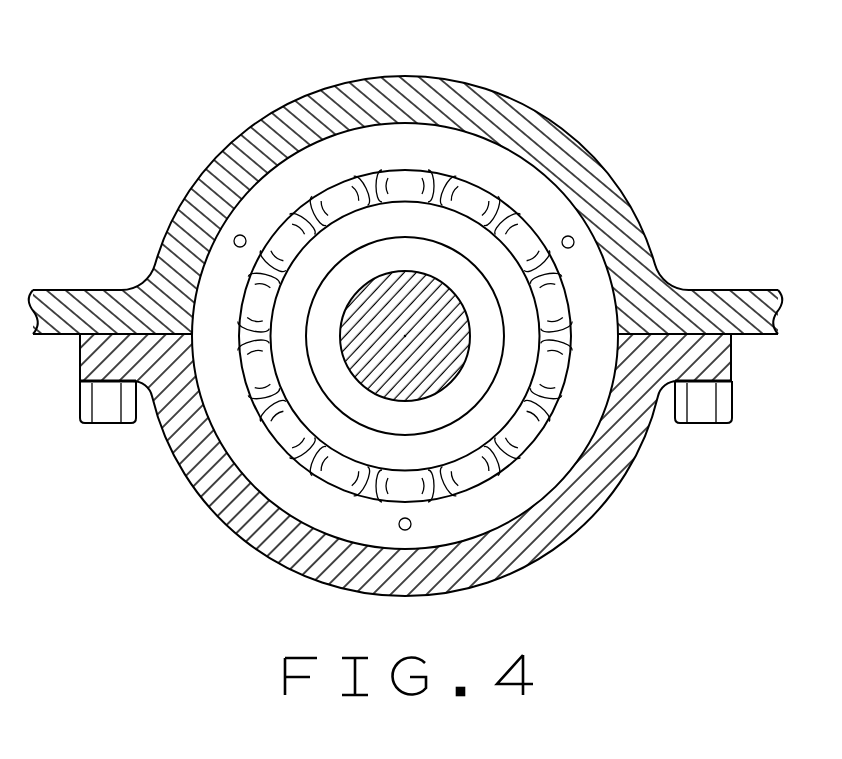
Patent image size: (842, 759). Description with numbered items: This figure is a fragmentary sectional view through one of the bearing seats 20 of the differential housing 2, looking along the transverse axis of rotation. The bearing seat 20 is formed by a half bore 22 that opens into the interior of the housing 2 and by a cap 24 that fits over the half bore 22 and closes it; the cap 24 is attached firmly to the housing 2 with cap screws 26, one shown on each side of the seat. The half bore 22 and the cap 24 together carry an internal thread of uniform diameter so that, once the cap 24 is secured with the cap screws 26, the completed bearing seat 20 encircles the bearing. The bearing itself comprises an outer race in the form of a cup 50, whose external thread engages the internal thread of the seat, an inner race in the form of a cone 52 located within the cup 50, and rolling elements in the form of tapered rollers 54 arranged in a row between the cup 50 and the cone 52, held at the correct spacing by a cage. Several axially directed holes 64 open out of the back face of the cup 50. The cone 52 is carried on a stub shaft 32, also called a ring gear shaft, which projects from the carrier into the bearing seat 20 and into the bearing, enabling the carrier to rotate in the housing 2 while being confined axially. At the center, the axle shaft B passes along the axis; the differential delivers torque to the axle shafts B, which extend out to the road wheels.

The housing 2 is at (166, 230).
The bearing seat 20 is at (623, 193).
The half bore 22 is at (591, 250).
The cap 24 is at (585, 498).
The cap screw 26 is at (109, 424).
The stub shaft 32 is at (352, 403).
The cup 50 is at (287, 185).
The cone 52 is at (378, 218).
The tapered rollers 54 is at (473, 197).
The axially directed holes 64 is at (569, 235).
The axle shaft B is at (424, 394).